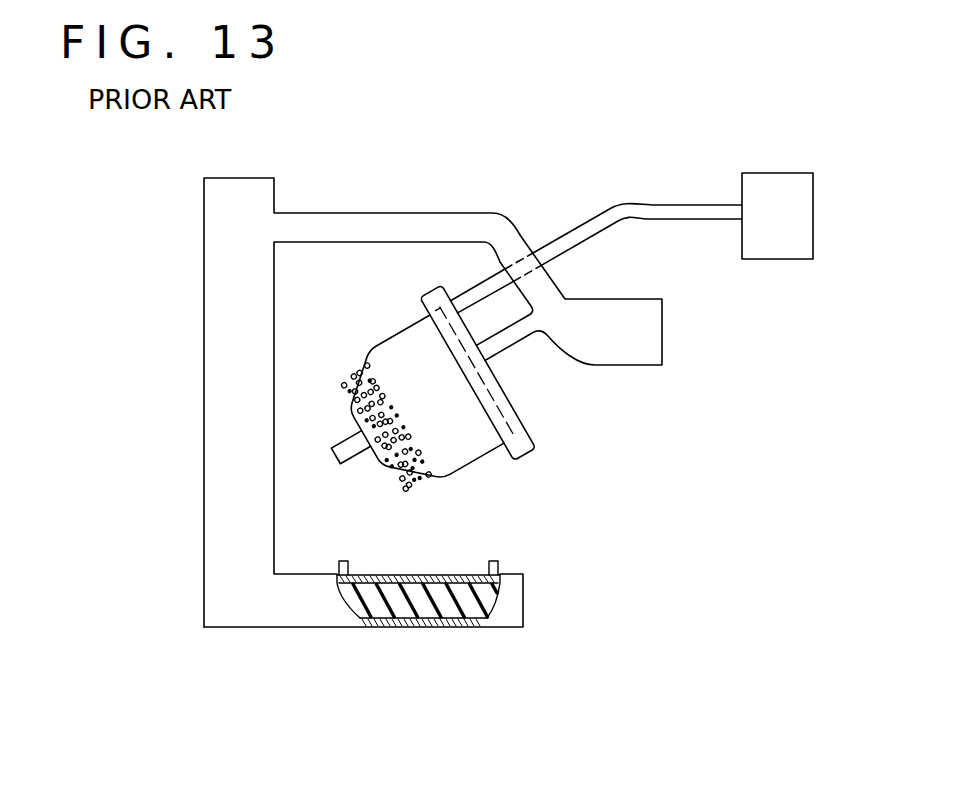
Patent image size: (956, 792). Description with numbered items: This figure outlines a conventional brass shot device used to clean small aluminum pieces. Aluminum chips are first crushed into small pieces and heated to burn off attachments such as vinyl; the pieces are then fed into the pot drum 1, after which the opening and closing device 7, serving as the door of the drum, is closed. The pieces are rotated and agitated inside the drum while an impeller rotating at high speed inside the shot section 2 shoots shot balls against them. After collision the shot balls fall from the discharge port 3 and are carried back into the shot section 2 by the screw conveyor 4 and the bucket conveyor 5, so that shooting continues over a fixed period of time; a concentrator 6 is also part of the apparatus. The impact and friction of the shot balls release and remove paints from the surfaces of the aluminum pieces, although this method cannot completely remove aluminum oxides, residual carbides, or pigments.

The pot drum 1 is at (485, 463).
The shot section 2 is at (626, 366).
The discharge port 3 is at (378, 462).
The screw conveyor 4 is at (450, 621).
The bucket conveyor 5 is at (204, 441).
The concentrator 6 is at (780, 260).
The opening and closing device 7 is at (521, 422).